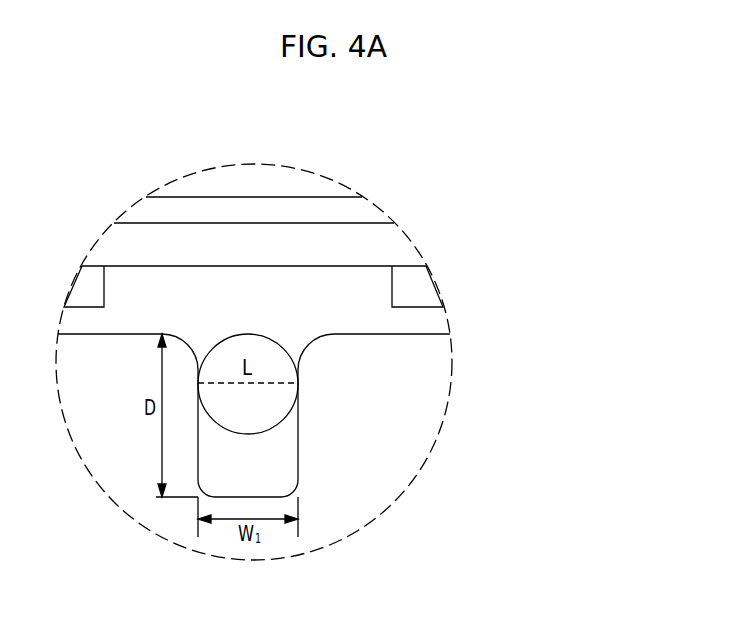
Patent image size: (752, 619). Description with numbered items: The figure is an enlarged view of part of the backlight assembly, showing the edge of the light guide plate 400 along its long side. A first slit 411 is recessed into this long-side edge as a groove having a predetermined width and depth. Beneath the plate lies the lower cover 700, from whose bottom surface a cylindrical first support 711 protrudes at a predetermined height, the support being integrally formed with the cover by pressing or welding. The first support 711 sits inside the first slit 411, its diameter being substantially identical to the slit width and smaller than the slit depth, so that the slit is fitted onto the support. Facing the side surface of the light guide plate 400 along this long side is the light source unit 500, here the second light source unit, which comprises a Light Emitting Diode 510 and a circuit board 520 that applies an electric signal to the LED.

The light guide plate 400 is at (244, 438).
The first slit 411 is at (253, 453).
The light source unit 500 is at (354, 260).
The Light Emitting Diode (LED) 510 is at (417, 285).
The circuit board 520 is at (392, 240).
The lower cover 700 is at (273, 206).
The first support 711 is at (262, 402).